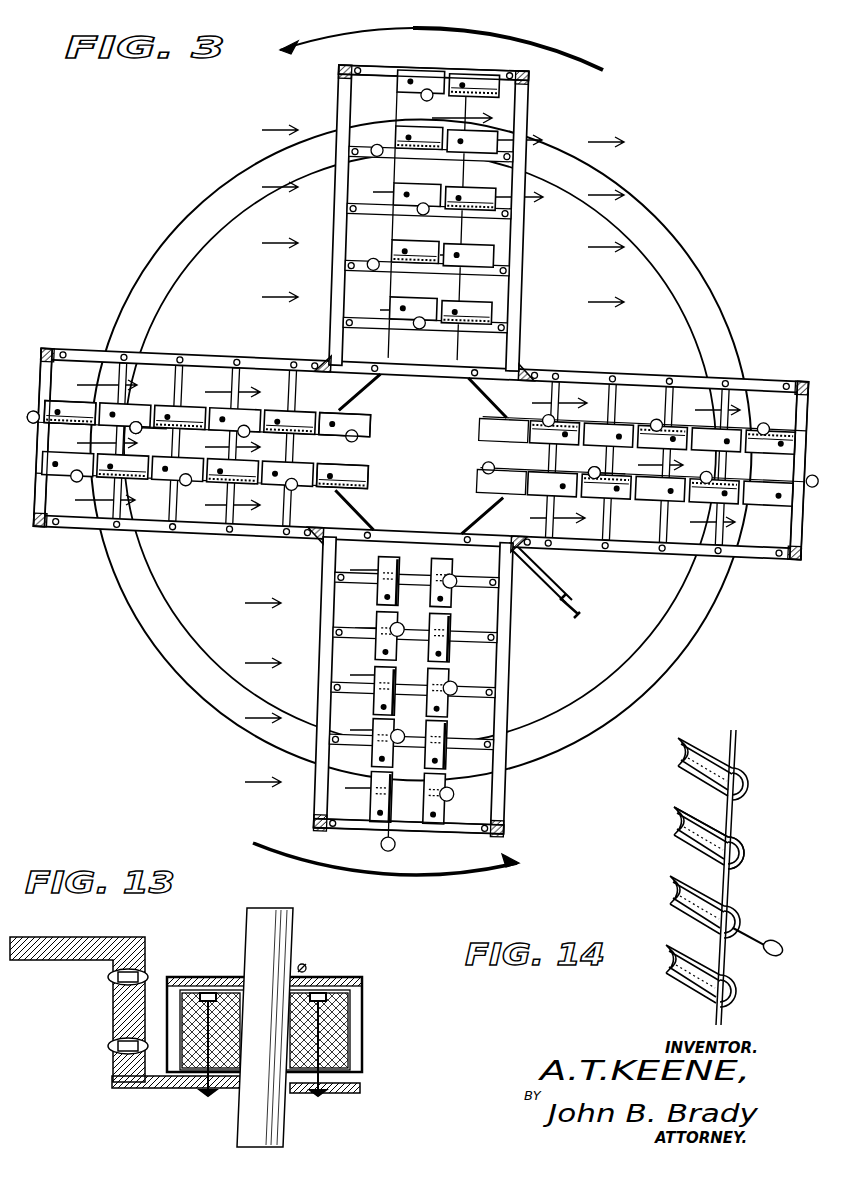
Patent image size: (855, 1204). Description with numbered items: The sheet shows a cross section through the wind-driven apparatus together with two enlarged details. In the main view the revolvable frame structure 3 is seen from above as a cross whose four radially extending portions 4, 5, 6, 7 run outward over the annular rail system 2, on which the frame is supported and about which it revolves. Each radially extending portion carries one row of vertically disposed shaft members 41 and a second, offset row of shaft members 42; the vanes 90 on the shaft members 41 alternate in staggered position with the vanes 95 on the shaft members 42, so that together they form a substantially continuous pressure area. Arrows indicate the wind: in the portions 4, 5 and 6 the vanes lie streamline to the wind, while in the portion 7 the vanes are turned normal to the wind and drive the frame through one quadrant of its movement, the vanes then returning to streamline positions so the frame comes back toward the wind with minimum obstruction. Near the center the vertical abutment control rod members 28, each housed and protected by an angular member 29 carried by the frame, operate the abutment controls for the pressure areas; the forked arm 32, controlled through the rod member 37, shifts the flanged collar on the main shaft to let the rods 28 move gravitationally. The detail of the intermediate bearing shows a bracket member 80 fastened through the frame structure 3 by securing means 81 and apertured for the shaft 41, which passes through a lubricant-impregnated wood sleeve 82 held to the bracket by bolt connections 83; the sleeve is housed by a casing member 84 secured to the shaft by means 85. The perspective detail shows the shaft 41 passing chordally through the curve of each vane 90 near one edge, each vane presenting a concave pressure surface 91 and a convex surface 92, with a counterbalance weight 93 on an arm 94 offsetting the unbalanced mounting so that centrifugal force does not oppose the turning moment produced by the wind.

In FIG. 3, the annular rail system 2 is at (672, 651).
In FIG. 3, the frame structure 3 is at (254, 350).
In FIG. 13, the frame structure 3 is at (78, 955).
In FIG. 3, the radially extending portion 4 is at (215, 360).
In FIG. 3, the radially extending portion 5 is at (343, 237).
In FIG. 3, the radially extending portion 6 is at (635, 372).
In FIG. 3, the radially extending portion 7 is at (498, 682).
In FIG. 3, the abutment control rod member 28 is at (330, 348).
In FIG. 3, the angular member 29 is at (340, 372).
In FIG. 3, the forked arm 32 is at (556, 598).
In FIG. 3, the rod member 37 is at (576, 606).
In FIG. 3, the shaft member 41 is at (378, 464).
In FIG. 13, the shaft member 41 is at (268, 1122).
In FIG. 14, the shaft member 41 is at (740, 748).
In FIG. 3, the shaft member 42 is at (345, 428).
In FIG. 3, the vane 90 is at (68, 405).
In FIG. 14, the vane 90 is at (756, 862).
In FIG. 14, the concave pressure surface 91 is at (685, 842).
In FIG. 14, the convex surface 92 is at (742, 838).
In FIG. 3, the counterbalance weight 93 is at (150, 428).
In FIG. 14, the counterbalance weight 93 is at (772, 957).
In FIG. 3, the arm 94 is at (168, 460).
In FIG. 14, the arm 94 is at (752, 928).
In FIG. 3, the vane 95 is at (62, 480).
In FIG. 13, the bracket member 80 is at (165, 1090).
In FIG. 13, the securing means 81 is at (112, 1046).
In FIG. 13, the wood sleeve 82 is at (345, 1022).
In FIG. 13, the bolt connection 83 is at (210, 1095).
In FIG. 13, the casing member 84 is at (330, 985).
In FIG. 13, the securing means 85 is at (306, 964).